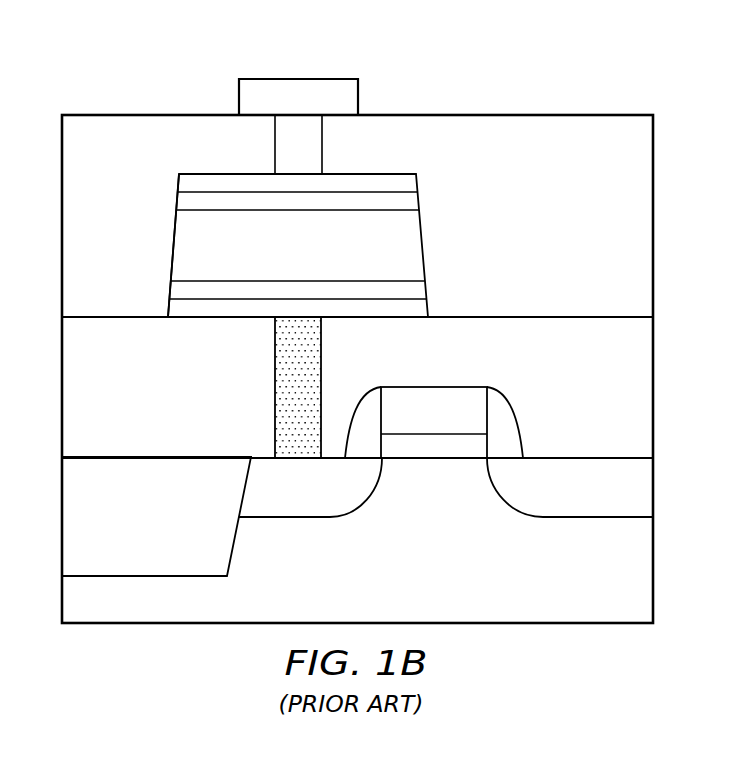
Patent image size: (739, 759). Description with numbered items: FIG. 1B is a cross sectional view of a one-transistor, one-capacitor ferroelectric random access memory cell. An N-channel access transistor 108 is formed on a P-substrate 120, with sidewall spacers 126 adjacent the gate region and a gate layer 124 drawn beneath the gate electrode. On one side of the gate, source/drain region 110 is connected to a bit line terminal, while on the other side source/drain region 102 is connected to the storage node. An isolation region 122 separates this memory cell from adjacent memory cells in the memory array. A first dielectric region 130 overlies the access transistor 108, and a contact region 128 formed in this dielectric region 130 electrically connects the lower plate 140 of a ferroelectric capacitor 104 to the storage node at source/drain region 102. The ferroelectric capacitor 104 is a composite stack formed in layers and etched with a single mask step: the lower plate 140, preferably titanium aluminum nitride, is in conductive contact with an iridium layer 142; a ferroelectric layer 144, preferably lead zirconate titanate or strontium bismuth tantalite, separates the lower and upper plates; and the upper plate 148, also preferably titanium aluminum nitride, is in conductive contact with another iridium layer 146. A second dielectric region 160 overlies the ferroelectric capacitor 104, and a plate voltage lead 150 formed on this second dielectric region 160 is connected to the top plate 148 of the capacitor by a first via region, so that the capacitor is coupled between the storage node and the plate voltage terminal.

The source/drain region 102 is at (347, 518).
The ferroelectric capacitor 104 is at (155, 216).
The access transistor 108 is at (398, 385).
The source/drain region 110 is at (512, 507).
The P-substrate 120 is at (570, 608).
The isolation region 122 is at (233, 546).
The gate dielectric 124 is at (428, 460).
The sidewall spacers 126 is at (502, 398).
The contact region 128 is at (273, 410).
The first dielectric region 130 is at (146, 380).
The lower plate 140 is at (428, 310).
The iridium layer 142 is at (425, 288).
The ferroelectric layer 144 is at (172, 246).
The iridium layer 146 is at (420, 200).
The upper plate 148 is at (418, 184).
The plate voltage lead 150 is at (298, 77).
The second dielectric region 160 is at (122, 158).